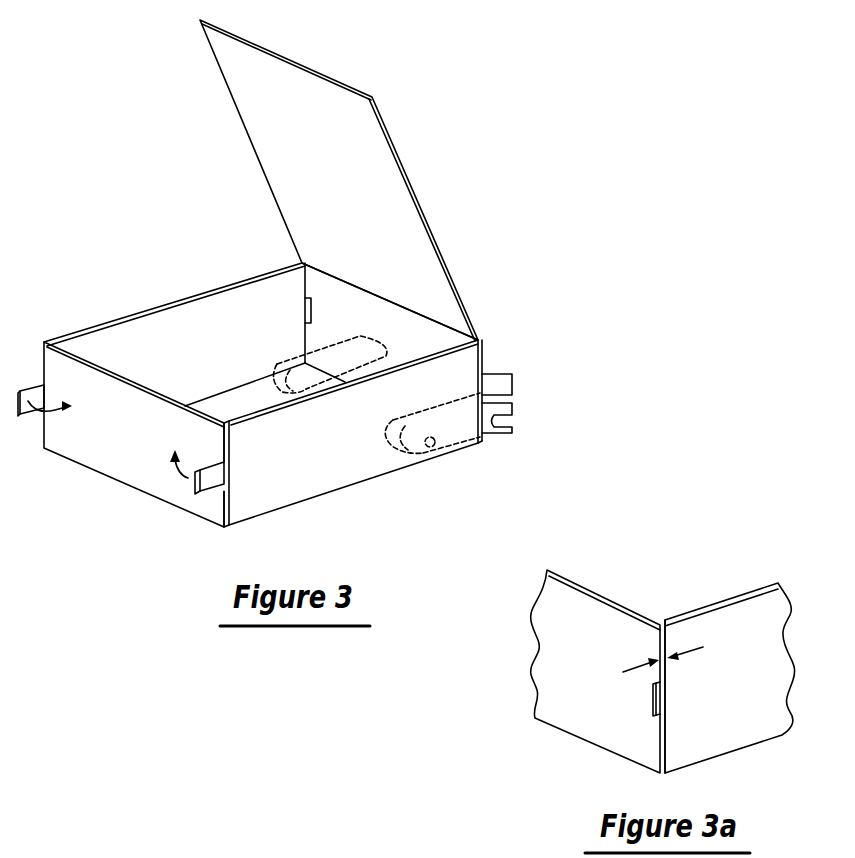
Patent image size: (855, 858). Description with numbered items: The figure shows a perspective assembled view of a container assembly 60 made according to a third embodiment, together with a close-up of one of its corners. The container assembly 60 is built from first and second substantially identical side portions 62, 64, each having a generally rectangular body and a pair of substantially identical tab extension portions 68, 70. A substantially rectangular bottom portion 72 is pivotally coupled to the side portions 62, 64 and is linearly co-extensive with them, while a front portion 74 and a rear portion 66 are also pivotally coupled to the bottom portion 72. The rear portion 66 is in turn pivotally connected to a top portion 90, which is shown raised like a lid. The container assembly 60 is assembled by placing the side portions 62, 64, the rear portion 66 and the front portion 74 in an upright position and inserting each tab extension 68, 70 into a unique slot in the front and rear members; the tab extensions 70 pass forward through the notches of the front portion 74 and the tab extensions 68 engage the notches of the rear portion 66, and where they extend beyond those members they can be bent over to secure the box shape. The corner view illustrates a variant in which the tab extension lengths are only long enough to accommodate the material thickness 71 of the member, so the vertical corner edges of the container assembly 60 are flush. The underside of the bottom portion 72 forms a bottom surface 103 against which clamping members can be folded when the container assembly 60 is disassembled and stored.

In FIG. 3, the container assembly 60 is at (468, 140).
In FIG. 3, the top portion 90 is at (330, 186).
In FIG. 3, the bottom portion 72 is at (247, 397).
In FIG. 3, the first side portion 62 is at (197, 353).
In FIG. 3, the rear portion 66 is at (328, 321).
In FIG. 3, the tab extension portion 68 is at (484, 380).
In FIG. 3, the front portion 74 is at (118, 446).
In FIG. 3A, the front portion 74 is at (582, 680).
In FIG. 3, the second side portion 64 is at (325, 453).
In FIG. 3A, the second side portion 64 is at (720, 691).
In FIG. 3, the tab extension portion 70 is at (229, 474).
In FIG. 3A, the tab extension portion 70 is at (663, 697).
In FIG. 3, the bottom surface 103 is at (347, 490).
In FIG. 3A, the material thickness 71 is at (703, 647).